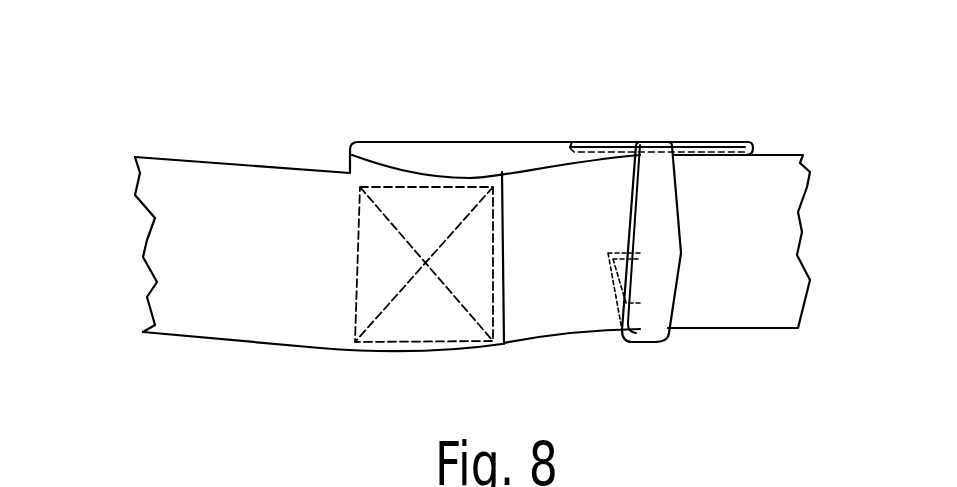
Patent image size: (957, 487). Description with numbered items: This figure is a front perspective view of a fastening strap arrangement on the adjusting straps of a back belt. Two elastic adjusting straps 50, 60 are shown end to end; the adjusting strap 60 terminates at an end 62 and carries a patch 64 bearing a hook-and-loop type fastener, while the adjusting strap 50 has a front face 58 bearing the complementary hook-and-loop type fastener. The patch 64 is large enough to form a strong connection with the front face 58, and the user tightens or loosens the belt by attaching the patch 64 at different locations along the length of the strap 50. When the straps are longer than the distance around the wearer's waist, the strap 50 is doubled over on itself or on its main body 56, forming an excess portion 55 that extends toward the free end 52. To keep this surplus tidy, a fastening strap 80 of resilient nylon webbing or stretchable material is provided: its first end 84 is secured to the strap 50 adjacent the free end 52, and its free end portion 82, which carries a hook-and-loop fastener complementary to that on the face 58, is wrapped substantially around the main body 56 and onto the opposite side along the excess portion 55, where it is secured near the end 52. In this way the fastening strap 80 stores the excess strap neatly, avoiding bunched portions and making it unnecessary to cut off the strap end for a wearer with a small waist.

The adjusting strap 50 is at (798, 212).
The free end of strap 52 is at (750, 147).
The excess portion 55 is at (353, 80).
The main body of strap 56 is at (578, 335).
The front face of strap 58 is at (717, 262).
The adjusting strap 60 is at (143, 257).
The end of strap 62 is at (502, 342).
The patch 64 is at (356, 244).
The fastening strap 80 is at (668, 297).
The free end portion of fastening strap 82 is at (611, 277).
The first end of fastening strap 84 is at (650, 143).